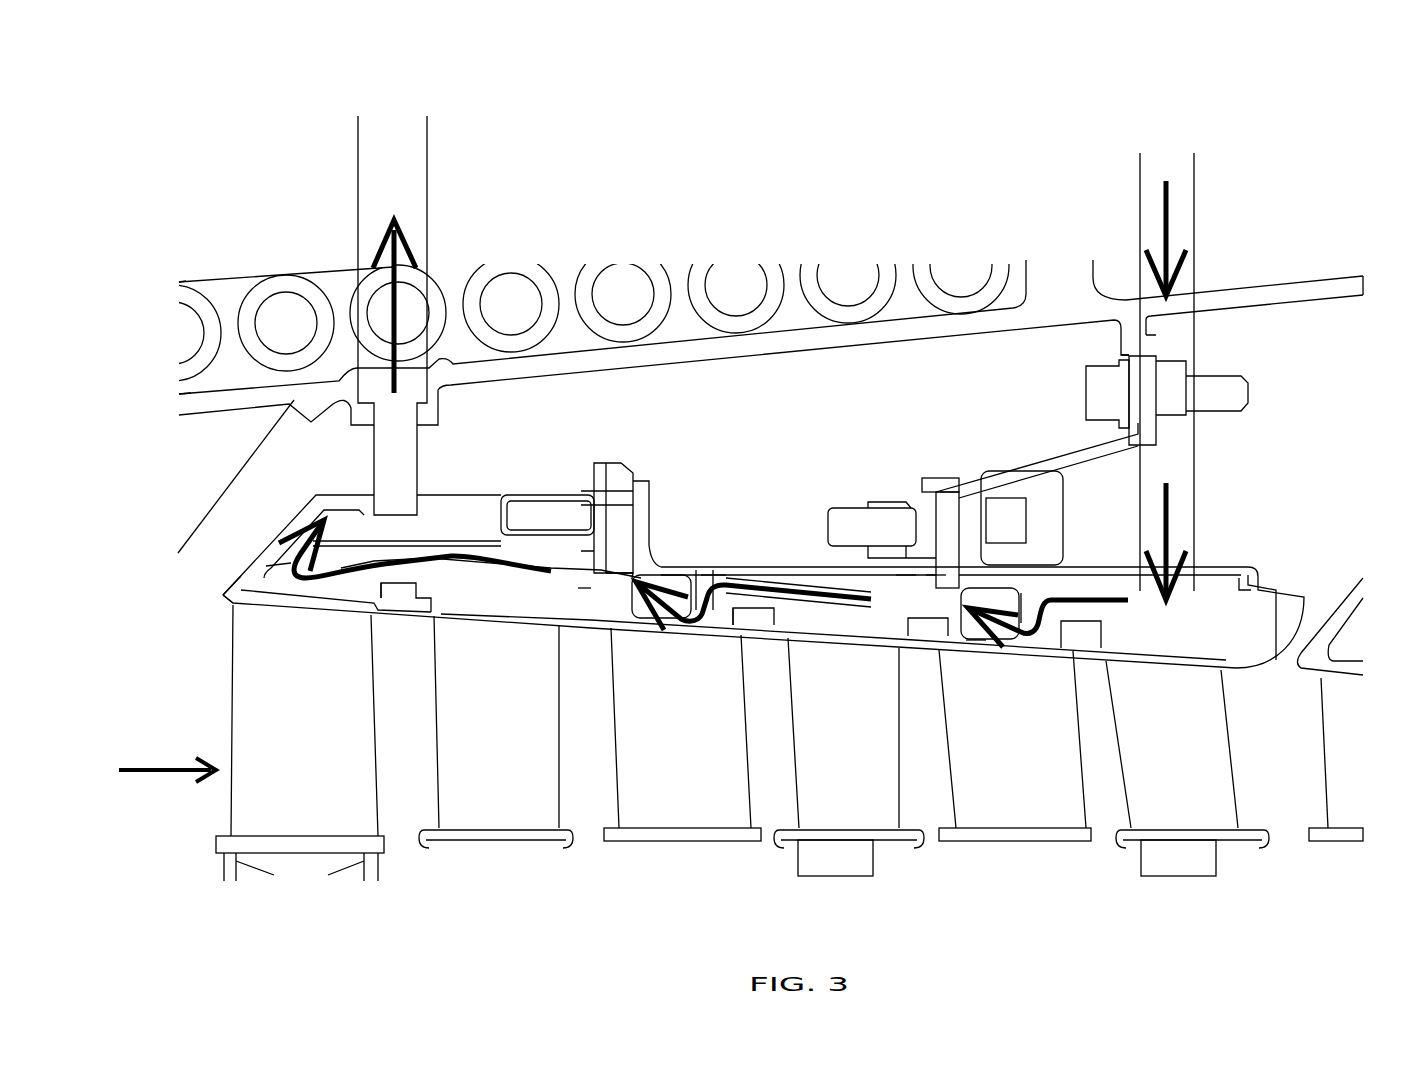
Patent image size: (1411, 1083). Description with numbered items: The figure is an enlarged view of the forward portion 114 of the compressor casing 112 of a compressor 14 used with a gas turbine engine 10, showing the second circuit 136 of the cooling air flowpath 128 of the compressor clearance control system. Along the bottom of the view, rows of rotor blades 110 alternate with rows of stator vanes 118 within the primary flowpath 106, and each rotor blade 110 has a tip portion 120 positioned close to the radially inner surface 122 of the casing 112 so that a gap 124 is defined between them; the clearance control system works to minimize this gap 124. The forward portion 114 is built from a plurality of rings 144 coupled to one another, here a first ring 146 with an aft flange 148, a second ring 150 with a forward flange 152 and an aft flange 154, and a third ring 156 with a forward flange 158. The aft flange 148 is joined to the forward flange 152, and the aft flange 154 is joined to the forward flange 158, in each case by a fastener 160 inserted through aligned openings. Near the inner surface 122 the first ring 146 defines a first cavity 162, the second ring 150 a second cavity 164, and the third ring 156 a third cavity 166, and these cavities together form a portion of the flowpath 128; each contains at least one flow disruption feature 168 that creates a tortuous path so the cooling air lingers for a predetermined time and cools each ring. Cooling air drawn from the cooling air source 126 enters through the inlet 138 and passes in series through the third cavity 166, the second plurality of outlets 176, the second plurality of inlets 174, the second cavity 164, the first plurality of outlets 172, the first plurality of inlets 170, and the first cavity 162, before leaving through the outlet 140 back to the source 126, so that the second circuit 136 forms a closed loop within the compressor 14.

The gas turbine engine 10 is at (1322, 368).
The compressor 14 is at (218, 162).
The primary flowpath 106 is at (165, 760).
The rotor blade 110 is at (284, 786).
The compressor casing 112 is at (164, 327).
The forward portion 114 is at (240, 537).
The stator vanes 118 is at (479, 786).
The tip portion 120 is at (258, 622).
The radially inner surface 122 is at (393, 620).
The gap 124 is at (213, 604).
The cooling air source 126 is at (833, 143).
The flowpath 128 is at (392, 298).
The second circuit 136 is at (686, 233).
The inlet 138 is at (1168, 160).
The outlet 140 is at (398, 128).
The rings 144 is at (800, 420).
The first ring 146 is at (298, 520).
The aft flange 148 is at (605, 470).
The second ring 150 is at (775, 566).
The forward flange 152 is at (620, 477).
The aft flange 154 is at (925, 500).
The third ring 156 is at (1227, 582).
The forward flange 158 is at (950, 498).
The fastener 160 is at (648, 495).
The first cavity 162 is at (440, 520).
The second cavity 164 is at (712, 567).
The third cavity 166 is at (975, 657).
The flow disruption feature 168 is at (342, 537).
The first plurality of circumferentially-spaced inlets 170 is at (578, 572).
The first plurality of circumferentially-spaced outlets 172 is at (623, 577).
The second plurality of circumferentially-spaced inlets 174 is at (905, 598).
The second plurality of circumferentially-spaced outlets 176 is at (935, 600).